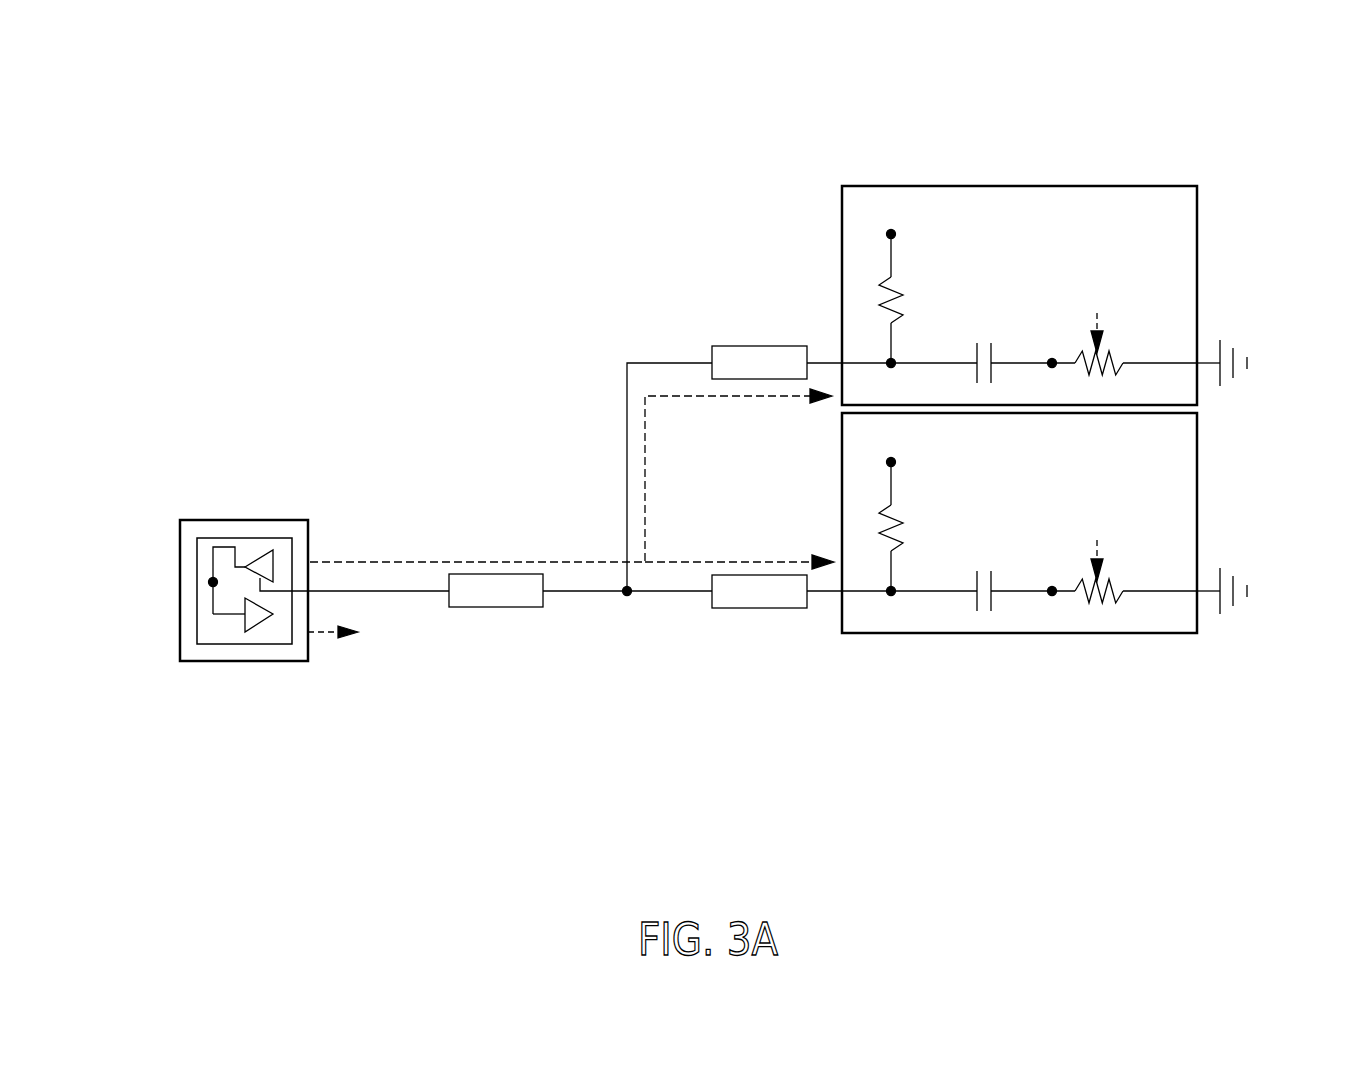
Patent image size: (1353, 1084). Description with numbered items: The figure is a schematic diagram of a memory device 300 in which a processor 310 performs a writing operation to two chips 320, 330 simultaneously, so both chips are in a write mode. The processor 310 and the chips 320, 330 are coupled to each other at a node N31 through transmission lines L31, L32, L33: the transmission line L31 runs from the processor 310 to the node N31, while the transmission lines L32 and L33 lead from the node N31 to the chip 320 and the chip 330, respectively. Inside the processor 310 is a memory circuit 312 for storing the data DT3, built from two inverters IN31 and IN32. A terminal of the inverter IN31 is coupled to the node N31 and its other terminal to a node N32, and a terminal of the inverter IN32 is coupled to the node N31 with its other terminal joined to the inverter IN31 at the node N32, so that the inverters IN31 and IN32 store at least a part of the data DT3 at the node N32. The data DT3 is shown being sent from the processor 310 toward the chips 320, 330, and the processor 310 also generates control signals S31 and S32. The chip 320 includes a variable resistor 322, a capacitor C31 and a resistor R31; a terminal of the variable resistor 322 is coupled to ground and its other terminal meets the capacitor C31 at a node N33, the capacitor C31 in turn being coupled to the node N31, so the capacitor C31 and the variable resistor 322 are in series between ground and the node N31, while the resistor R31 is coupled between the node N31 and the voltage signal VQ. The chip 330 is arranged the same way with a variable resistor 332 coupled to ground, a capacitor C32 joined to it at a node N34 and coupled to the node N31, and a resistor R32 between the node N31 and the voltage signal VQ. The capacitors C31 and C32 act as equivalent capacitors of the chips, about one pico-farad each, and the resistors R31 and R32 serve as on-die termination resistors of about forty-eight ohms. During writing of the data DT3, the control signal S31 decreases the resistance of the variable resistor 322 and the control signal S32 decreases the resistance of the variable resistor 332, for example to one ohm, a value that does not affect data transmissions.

The memory device 300 is at (1322, 71).
The processor 310 is at (180, 533).
The memory circuit 312 is at (197, 623).
The chip 320 is at (842, 237).
The variable resistor 322 is at (1108, 355).
The chip 330 is at (842, 471).
The variable resistor 332 is at (1108, 585).
The inverter IN31 is at (255, 565).
The inverter IN32 is at (264, 628).
The node N31 is at (627, 596).
The node N32 is at (213, 582).
The node N33 is at (1052, 380).
The node N34 is at (1052, 611).
The transmission line L31 is at (496, 591).
The transmission line L32 is at (759, 363).
The transmission line L33 is at (759, 592).
The data DT3 is at (572, 479).
The resistor R31 is at (900, 291).
The resistor R32 is at (900, 519).
The capacitor C31 is at (984, 346).
The capacitor C32 is at (984, 575).
The control signal S31 is at (1097, 317).
The control signal S32 is at (1097, 544).